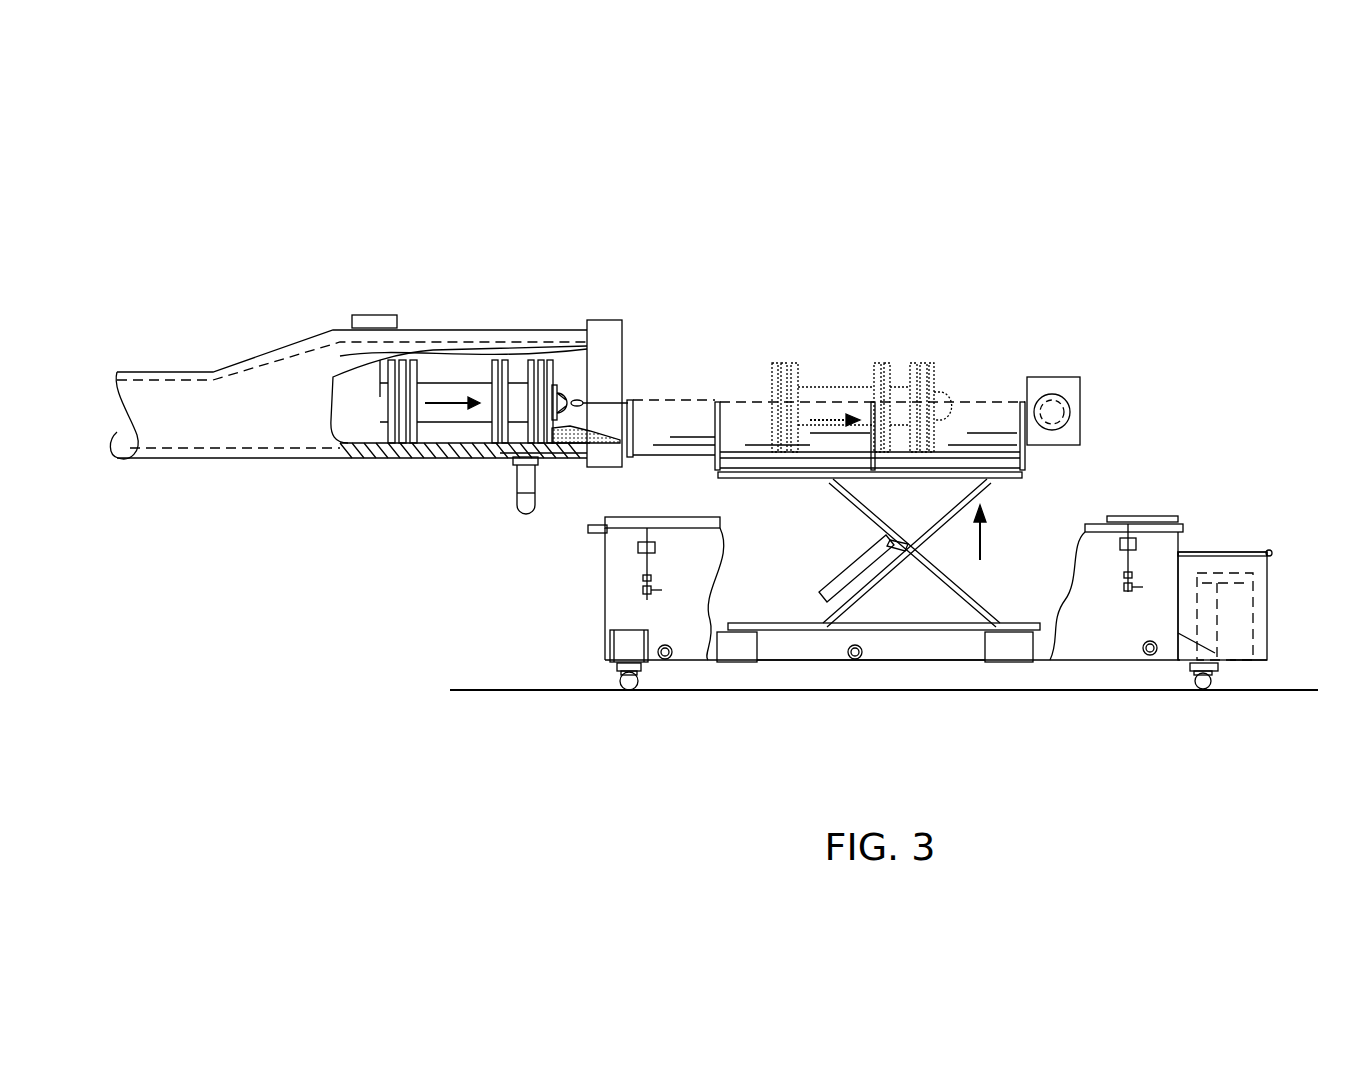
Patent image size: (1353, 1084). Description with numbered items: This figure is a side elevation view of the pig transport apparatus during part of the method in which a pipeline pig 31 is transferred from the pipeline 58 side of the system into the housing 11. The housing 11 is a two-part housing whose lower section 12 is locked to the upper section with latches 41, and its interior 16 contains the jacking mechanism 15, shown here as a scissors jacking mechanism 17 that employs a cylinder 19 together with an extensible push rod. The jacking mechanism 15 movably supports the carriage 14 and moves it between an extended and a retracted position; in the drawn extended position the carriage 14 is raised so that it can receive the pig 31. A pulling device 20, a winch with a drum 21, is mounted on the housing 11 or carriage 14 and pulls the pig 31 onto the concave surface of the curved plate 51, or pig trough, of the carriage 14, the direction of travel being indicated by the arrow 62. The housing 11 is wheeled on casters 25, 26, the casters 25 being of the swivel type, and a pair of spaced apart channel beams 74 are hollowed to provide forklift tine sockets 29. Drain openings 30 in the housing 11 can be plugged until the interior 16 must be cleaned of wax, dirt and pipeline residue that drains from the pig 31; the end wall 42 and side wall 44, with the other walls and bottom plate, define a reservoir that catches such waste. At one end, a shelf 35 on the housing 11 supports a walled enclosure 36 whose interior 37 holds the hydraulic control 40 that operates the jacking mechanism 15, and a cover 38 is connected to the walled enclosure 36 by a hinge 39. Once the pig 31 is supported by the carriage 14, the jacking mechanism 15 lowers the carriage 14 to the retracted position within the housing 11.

The housing 11 is at (605, 553).
The lower section 12 is at (625, 596).
The carriage 14 is at (970, 410).
The jacking mechanism 15 is at (803, 540).
The interior 16 is at (762, 540).
The scissors jacking mechanism 17 is at (877, 572).
The cylinder 19 is at (872, 563).
The pulling device 20 is at (1082, 400).
The drum 21 is at (1054, 400).
The casters 25 is at (1200, 690).
The casters 26 is at (625, 690).
The forklift tine sockets 29 is at (737, 645).
The drain openings 30 is at (665, 660).
The pipeline pig 31 is at (360, 393).
The shelf 35 is at (1245, 660).
The walled enclosure 36 is at (1268, 595).
The interior 37 is at (1185, 590).
The cover 38 is at (1230, 552).
The hinge 39 is at (1269, 556).
The hydraulic control 40 is at (1217, 590).
The latches 41 is at (648, 563).
The end wall 42 is at (605, 630).
The side wall 44 is at (1085, 590).
The curved plate 51 is at (668, 410).
The pipeline 58 is at (178, 395).
The arrow 62 is at (446, 395).
The channel beams 74 is at (757, 643).